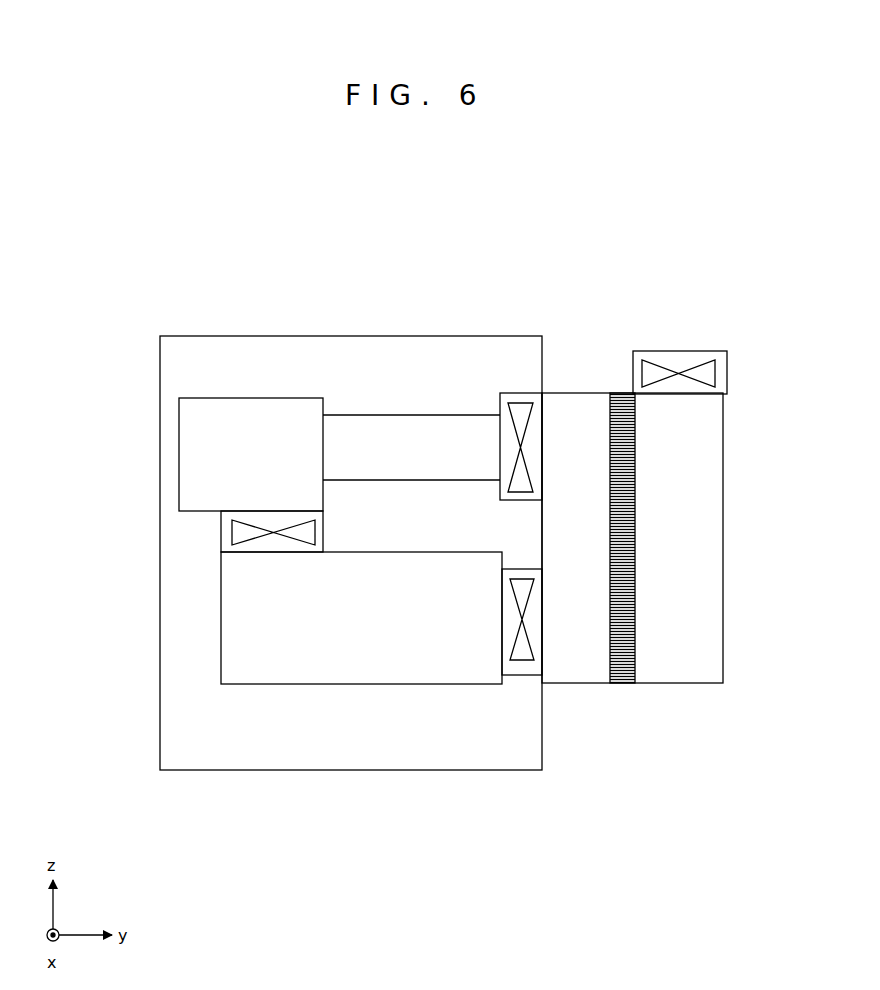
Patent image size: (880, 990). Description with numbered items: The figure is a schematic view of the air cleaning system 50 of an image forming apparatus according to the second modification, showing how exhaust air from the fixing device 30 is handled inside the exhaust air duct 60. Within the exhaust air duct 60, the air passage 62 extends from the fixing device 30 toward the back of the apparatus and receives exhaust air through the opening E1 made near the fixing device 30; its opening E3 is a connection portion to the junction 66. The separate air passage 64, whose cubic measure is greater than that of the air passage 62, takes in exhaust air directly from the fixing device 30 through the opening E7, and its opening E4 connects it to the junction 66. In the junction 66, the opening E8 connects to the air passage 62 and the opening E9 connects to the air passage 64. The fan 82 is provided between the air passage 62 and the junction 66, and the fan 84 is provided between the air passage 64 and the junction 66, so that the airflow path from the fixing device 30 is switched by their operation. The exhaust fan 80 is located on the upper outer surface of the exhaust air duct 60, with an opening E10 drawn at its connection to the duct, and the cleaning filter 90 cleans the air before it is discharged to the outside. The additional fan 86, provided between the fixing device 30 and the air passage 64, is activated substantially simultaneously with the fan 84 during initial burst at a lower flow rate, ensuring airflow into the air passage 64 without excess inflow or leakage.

The exhaust air duct 60 is at (442, 272).
The air cleaning system 50 is at (634, 463).
The fixing device 30 is at (220, 405).
The air passage 62 is at (440, 415).
The fan 82 is at (512, 400).
The fan 84 is at (522, 668).
The fan 86 is at (228, 530).
The air passage 64 is at (302, 682).
The junction 66 is at (592, 405).
The exhaust fan 80 is at (695, 358).
The cleaning filter 90 is at (620, 685).
The opening E1 is at (323, 432).
The opening E3 is at (500, 440).
The opening E4 is at (502, 637).
The opening E7 is at (272, 552).
The opening E8 is at (545, 450).
The opening E9 is at (545, 588).
The end portion E10 is at (682, 396).